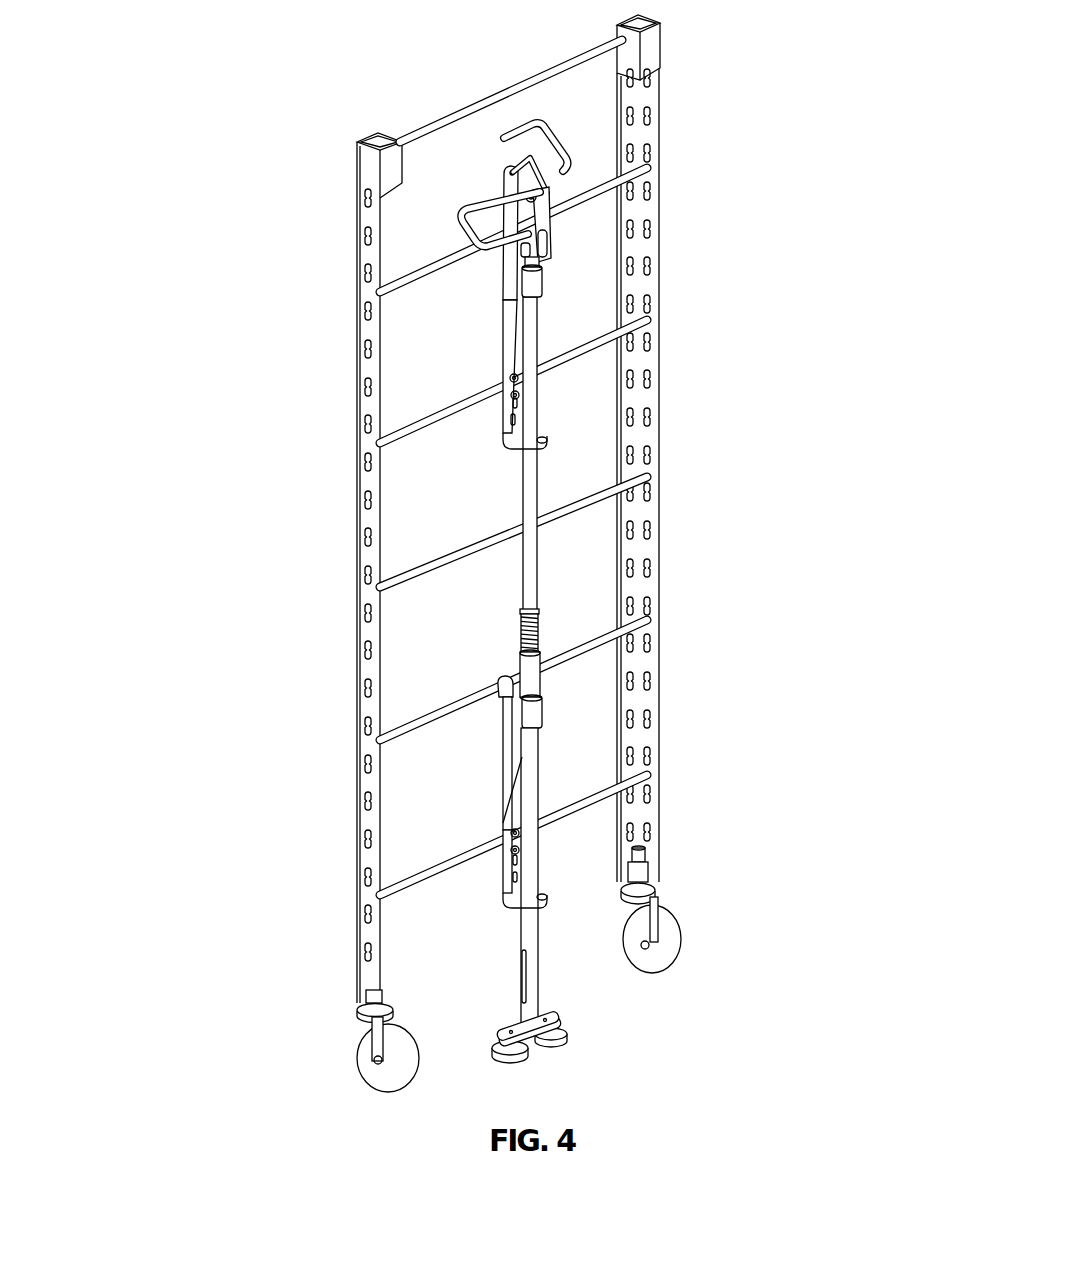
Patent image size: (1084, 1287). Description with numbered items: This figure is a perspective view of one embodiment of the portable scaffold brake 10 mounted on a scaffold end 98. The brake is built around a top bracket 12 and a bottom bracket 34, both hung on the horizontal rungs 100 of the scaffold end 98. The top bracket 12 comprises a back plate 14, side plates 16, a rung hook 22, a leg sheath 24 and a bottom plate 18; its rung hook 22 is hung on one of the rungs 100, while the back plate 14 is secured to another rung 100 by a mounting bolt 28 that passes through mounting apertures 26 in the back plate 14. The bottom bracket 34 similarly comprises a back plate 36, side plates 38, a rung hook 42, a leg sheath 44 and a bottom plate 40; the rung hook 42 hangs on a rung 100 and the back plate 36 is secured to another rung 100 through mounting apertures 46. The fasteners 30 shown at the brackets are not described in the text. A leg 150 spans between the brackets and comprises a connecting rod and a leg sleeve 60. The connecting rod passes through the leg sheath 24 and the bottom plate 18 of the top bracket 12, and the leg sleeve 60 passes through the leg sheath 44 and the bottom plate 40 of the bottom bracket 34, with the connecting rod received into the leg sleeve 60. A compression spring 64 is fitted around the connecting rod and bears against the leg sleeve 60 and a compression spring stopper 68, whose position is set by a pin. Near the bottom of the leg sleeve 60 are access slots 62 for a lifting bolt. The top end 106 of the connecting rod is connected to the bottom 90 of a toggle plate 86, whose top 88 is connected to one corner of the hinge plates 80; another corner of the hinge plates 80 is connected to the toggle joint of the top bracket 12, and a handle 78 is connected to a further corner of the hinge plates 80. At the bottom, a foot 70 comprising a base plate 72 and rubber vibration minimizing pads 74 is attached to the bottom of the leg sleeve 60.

The portable scaffold brake 10 is at (644, 509).
The top bracket 12 is at (475, 303).
The back plate 14 is at (517, 433).
The side plates 16 is at (503, 293).
The bottom plate 18 is at (542, 444).
The rung hook 22 is at (500, 227).
The leg sheath 24 is at (532, 283).
The mounting apertures 26 is at (383, 447).
The mounting bolt 28 is at (510, 378).
The fasteners 30 is at (512, 395).
The bottom bracket 34 is at (513, 691).
The back plate 36 is at (507, 868).
The side plates 38 is at (512, 753).
The bottom plate 40 is at (533, 902).
The rung hook 42 is at (513, 678).
The leg sheath 44 is at (532, 712).
The mounting apertures 46 is at (517, 877).
The leg sleeve 60 is at (530, 687).
The access slots 62 is at (525, 987).
The compression spring 64 is at (520, 642).
The compression spring stopper 68 is at (520, 612).
The foot 70 is at (684, 911).
The base plate 72 is at (503, 1035).
The vibration minimizing pads 74 is at (557, 1040).
The handle 78 is at (618, 110).
The hinge plates 80 is at (522, 181).
The toggle plate 86 is at (533, 217).
The top of the toggle plate 88 is at (525, 197).
The bottom of the toggle plate 90 is at (522, 253).
The scaffold end 98 is at (762, 494).
The horizontal rungs 100 is at (647, 170).
The top end of the connecting rod 106 is at (520, 273).
The leg 150 is at (517, 497).